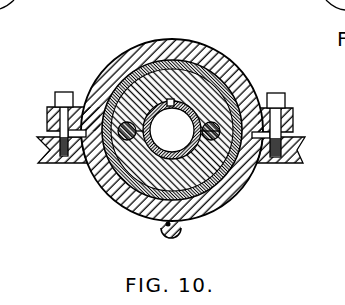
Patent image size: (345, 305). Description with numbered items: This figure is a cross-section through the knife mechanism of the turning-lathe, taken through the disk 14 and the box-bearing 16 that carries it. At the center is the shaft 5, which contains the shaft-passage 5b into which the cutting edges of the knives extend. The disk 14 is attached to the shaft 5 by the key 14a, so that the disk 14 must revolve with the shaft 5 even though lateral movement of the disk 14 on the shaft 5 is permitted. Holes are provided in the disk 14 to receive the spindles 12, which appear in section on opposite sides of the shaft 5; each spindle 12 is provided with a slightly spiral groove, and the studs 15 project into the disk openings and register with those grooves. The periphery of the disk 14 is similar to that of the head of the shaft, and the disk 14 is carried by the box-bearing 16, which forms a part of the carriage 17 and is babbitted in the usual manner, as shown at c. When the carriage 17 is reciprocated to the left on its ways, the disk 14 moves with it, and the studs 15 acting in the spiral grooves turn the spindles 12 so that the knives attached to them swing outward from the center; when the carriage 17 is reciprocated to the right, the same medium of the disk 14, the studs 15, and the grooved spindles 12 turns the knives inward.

The shaft 5 is at (180, 110).
The shaft-passage 5b is at (172, 130).
The spindles 12 is at (249, 97).
The disk 14 is at (239, 74).
The key 14a is at (182, 62).
The babbitt lining c is at (206, 60).
The studs 15 is at (104, 93).
The box-bearing 16 is at (171, 99).
The carriage 17 is at (40, 163).